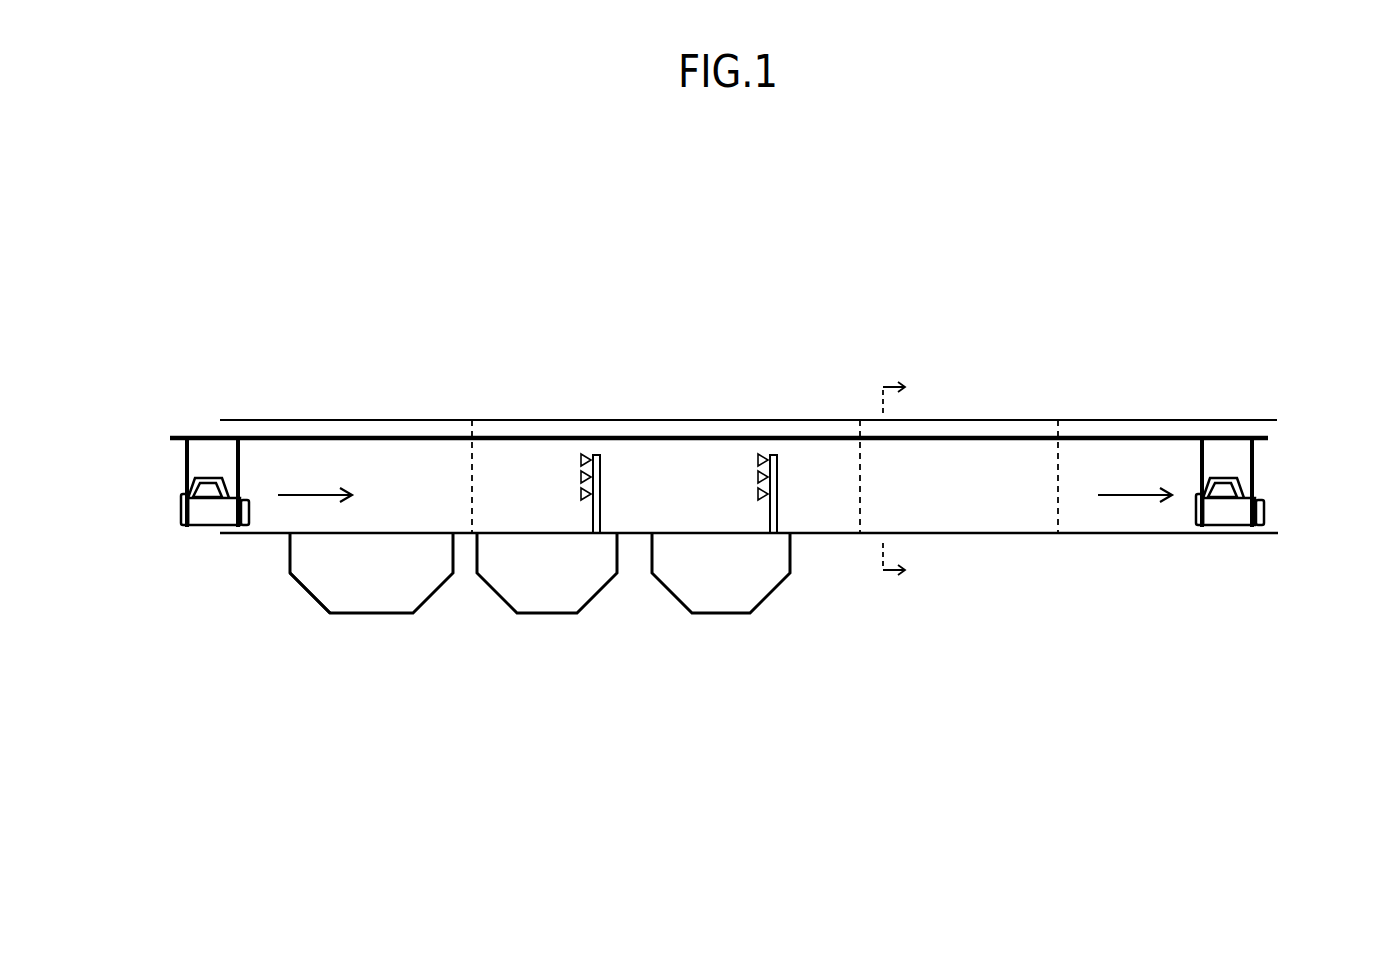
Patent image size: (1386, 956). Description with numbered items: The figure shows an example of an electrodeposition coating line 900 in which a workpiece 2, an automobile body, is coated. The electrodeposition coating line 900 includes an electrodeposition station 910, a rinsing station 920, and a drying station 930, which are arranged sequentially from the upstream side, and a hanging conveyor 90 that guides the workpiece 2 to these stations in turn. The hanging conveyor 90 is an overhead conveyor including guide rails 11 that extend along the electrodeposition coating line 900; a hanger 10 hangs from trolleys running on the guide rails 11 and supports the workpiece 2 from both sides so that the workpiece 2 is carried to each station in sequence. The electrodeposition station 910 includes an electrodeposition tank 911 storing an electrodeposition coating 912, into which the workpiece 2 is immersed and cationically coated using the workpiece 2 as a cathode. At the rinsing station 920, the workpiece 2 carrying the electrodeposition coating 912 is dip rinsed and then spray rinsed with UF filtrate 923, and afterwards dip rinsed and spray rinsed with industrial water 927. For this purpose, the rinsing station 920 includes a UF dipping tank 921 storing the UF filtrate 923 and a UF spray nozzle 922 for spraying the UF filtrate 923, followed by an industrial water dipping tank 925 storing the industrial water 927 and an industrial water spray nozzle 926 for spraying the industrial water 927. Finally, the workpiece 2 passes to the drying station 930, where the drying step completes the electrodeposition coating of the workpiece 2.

The electrodeposition coating line 900 is at (768, 306).
The hanging conveyor 90 is at (734, 435).
The hanger 10 is at (186, 468).
The guide rails 11 is at (305, 436).
The workpiece 2 is at (203, 512).
The electrodeposition station 910 is at (418, 420).
The electrodeposition tank 911 is at (370, 617).
The electrodeposition coating 912 is at (323, 582).
The rinsing station 920 is at (672, 420).
The UF dipping tank 921 is at (547, 617).
The UF spray nozzle 922 is at (601, 515).
The UF filtrate 923 is at (581, 478).
The industrial water dipping tank 925 is at (717, 617).
The industrial water spray nozzle 926 is at (778, 515).
The industrial water 927 is at (758, 480).
The drying station 930 is at (1023, 420).